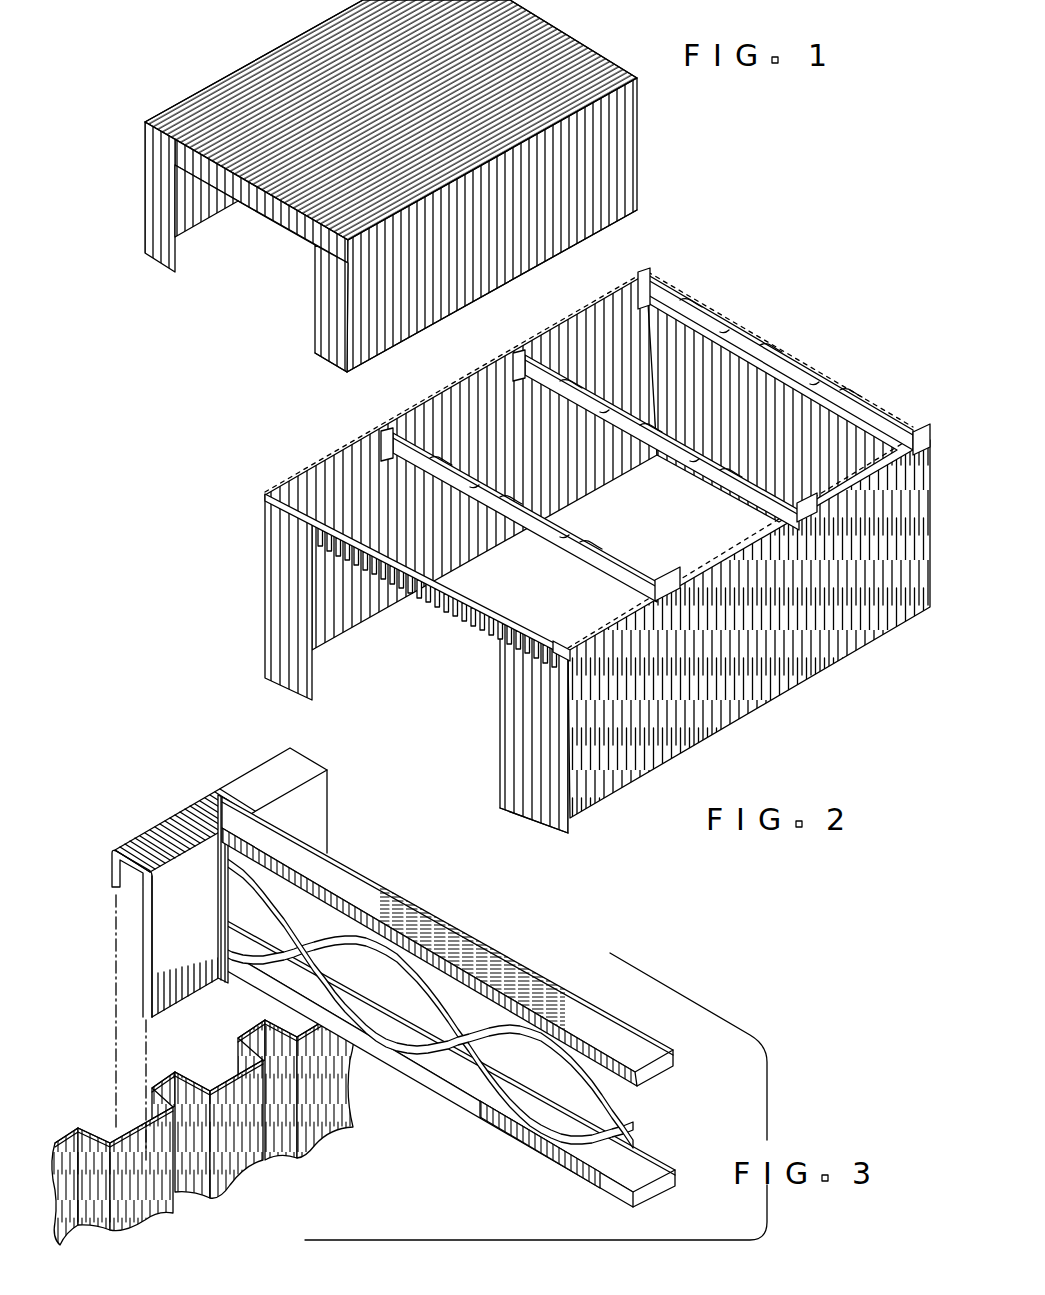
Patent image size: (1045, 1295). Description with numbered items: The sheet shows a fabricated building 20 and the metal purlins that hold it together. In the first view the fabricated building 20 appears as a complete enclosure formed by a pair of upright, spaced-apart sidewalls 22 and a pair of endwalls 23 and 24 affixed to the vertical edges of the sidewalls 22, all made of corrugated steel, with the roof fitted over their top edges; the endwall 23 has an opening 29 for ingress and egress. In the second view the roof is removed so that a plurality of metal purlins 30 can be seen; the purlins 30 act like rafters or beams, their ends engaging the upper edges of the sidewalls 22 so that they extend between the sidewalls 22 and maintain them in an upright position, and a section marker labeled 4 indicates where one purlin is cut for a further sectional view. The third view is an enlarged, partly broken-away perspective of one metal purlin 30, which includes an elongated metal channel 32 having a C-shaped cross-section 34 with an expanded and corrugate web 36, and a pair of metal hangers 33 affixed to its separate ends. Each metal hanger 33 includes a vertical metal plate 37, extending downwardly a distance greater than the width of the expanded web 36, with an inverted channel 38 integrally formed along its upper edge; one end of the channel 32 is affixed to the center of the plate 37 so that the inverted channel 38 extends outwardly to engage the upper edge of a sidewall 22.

In FIG. 1, the fabricated building 20 is at (262, 78).
In FIG. 1, the sidewalls 22 is at (620, 190).
In FIG. 2, the sidewalls 22 is at (456, 566).
In FIG. 3, the sidewalls 22 is at (241, 1097).
In FIG. 1, the endwall 23 is at (330, 318).
In FIG. 2, the endwall 23 is at (549, 834).
In FIG. 1, the endwall 24 is at (613, 46).
In FIG. 2, the endwall 24 is at (800, 345).
In FIG. 1, the opening 29 is at (298, 266).
In FIG. 2, the metal purlins 30 is at (654, 282).
In FIG. 3, the metal purlins 30 is at (519, 950).
In FIG. 3, the elongated metal channel 32 is at (356, 892).
In FIG. 3, the metal hangers 33 is at (300, 757).
In FIG. 3, the C-shaped cross-section 34 is at (675, 1058).
In FIG. 3, the expanded and corrugate web 36 is at (432, 1050).
In FIG. 3, the vertical metal plate 37 is at (165, 930).
In FIG. 3, the inverted channel 38 is at (127, 847).
In FIG. 2, the section line 4 is at (338, 421).